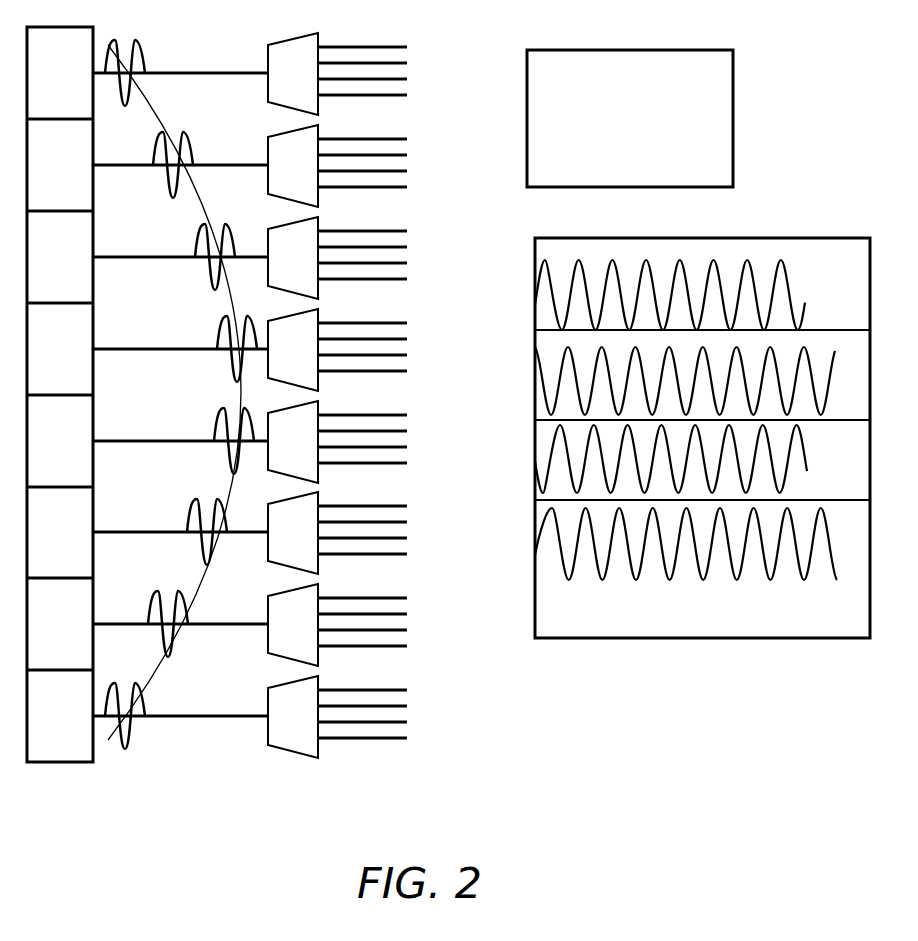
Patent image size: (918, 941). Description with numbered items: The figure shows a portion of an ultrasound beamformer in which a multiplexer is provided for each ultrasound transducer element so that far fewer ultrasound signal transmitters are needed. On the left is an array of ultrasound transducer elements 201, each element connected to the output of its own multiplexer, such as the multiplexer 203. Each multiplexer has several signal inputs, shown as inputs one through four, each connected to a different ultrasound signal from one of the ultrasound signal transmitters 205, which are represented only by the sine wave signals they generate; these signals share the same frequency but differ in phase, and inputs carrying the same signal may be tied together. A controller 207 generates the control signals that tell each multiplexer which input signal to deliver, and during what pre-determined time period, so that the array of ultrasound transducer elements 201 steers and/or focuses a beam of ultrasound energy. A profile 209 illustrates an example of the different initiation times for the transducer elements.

The array of ultrasound transducer elements 201 is at (78, 822).
The multiplexer 203 is at (296, 752).
The ultrasound signal transmitters 205 is at (612, 640).
The controller 207 is at (632, 50).
The profile 209 is at (146, 668).